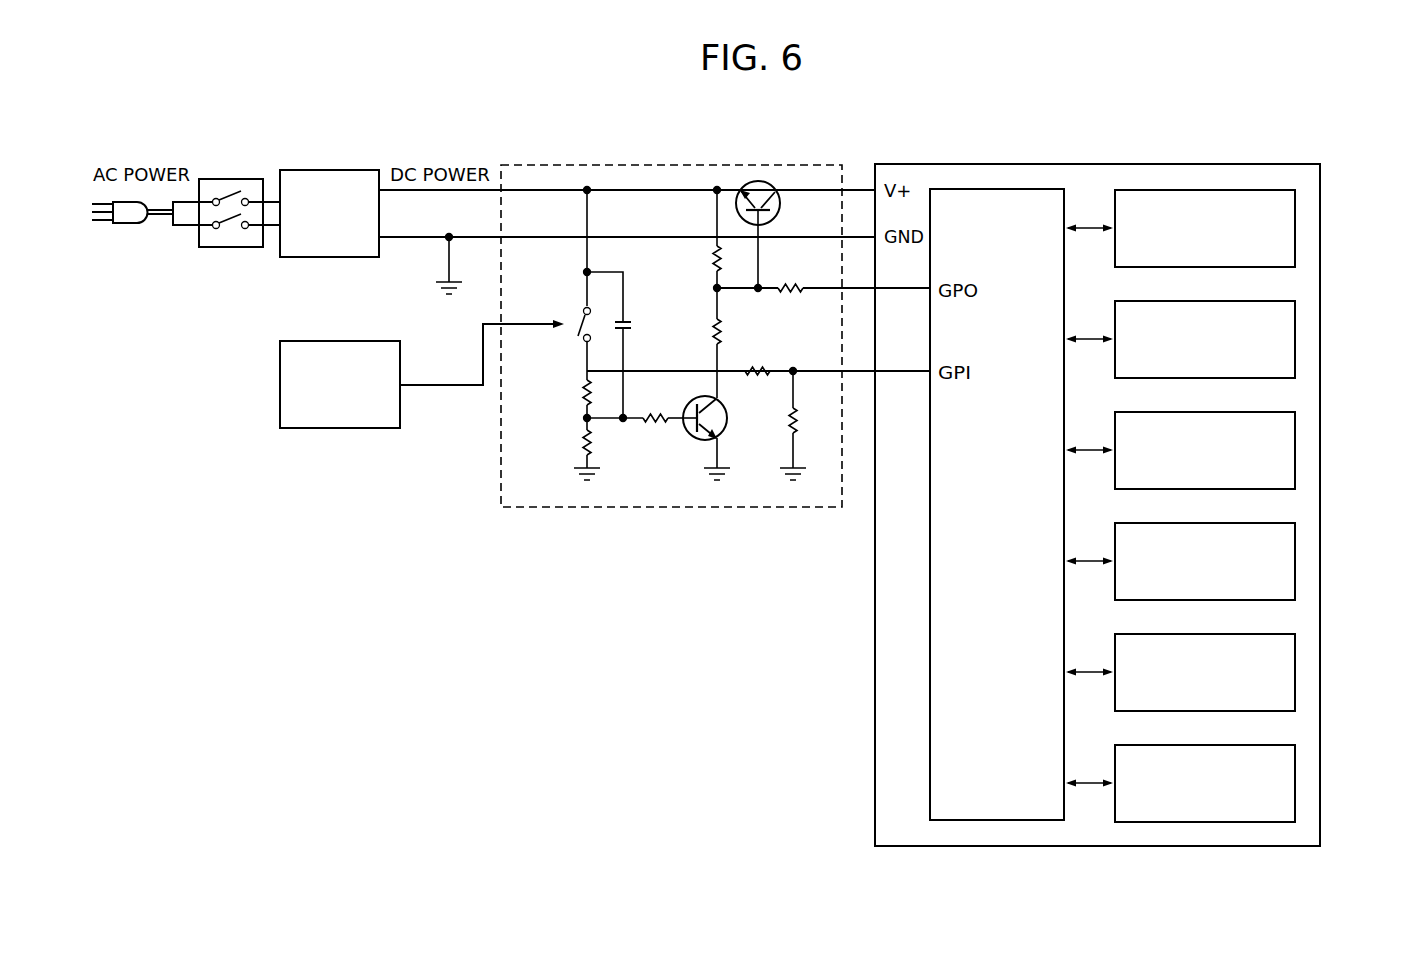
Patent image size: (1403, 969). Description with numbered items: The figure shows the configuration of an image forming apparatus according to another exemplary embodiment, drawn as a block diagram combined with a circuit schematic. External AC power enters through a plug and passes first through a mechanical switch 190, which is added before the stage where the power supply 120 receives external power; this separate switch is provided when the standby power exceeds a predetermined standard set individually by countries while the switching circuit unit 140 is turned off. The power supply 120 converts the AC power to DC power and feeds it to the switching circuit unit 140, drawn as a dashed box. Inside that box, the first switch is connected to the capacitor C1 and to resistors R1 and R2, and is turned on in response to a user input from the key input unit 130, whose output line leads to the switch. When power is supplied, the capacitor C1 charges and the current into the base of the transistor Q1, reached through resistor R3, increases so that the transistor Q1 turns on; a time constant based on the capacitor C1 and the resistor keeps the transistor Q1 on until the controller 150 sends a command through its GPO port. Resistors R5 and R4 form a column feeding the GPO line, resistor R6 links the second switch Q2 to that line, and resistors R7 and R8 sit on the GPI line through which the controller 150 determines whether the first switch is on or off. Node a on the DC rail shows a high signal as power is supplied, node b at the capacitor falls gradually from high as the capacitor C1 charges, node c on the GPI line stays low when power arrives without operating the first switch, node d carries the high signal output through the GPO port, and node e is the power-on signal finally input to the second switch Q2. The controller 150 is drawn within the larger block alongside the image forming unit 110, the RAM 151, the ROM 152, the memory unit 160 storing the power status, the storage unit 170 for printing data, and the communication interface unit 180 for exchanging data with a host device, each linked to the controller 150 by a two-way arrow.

The mechanical switch 190 is at (233, 179).
The power supply 120 is at (325, 170).
The key input unit 130 is at (340, 428).
The switching circuit unit 140 is at (660, 165).
The controller 150 is at (993, 189).
The image forming unit 110 is at (1295, 228).
The random access memory (RAM) 151 is at (1295, 339).
The read only memory (ROM) 152 is at (1295, 450).
The memory unit 160 is at (1295, 561).
The storage unit 170 is at (1295, 672).
The communication interface unit 180 is at (1295, 783).
The node a is at (517, 190).
The node b is at (623, 418).
The node c is at (860, 371).
The node d is at (853, 288).
The node e is at (800, 190).
The capacitor C1 is at (639, 326).
The resistor R1 is at (571, 392).
The resistor R2 is at (571, 442).
The resistor R3 is at (656, 433).
The resistor R4 is at (701, 331).
The resistor R5 is at (701, 258).
The resistor R6 is at (791, 303).
The resistor R7 is at (758, 385).
The resistor R8 is at (810, 420).
The transistor Q1 is at (720, 422).
The second switch Q2 is at (774, 203).